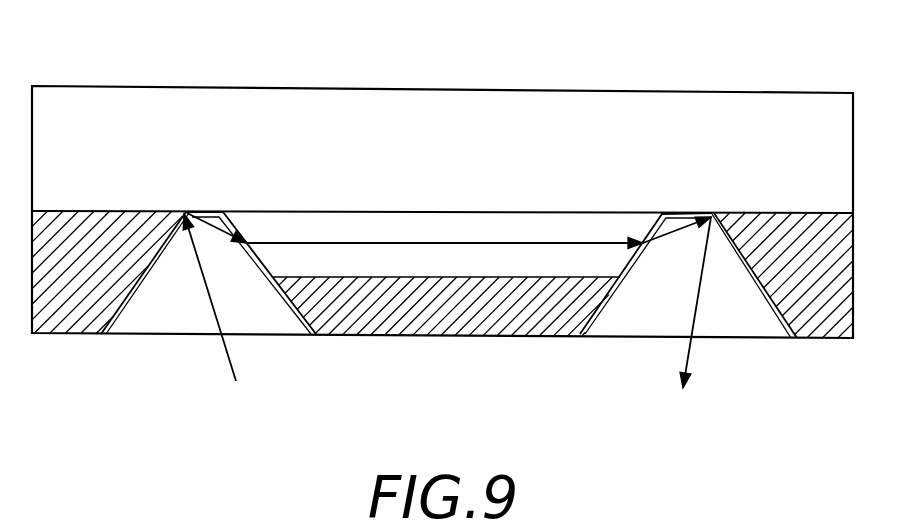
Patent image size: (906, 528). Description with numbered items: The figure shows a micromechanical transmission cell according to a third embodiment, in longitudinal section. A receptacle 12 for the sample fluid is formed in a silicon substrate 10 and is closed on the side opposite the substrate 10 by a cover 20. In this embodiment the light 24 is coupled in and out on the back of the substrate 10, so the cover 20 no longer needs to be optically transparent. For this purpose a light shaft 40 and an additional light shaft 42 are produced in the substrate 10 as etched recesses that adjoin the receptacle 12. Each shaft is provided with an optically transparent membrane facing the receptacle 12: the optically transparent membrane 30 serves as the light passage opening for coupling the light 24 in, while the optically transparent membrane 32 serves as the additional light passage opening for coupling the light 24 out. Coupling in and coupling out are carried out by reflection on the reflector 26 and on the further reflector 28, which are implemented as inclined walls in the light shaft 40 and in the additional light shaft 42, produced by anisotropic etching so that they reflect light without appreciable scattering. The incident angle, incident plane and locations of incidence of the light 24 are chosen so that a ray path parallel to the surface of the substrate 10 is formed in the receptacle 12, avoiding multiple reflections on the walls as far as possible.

The substrate 10 is at (450, 300).
The receptacle 12 is at (347, 226).
The cover 20 is at (685, 147).
The light 24 is at (231, 352).
The reflector 26 is at (140, 287).
The further reflector 28 is at (768, 300).
The optically transparent membrane 30 is at (236, 226).
The optically transparent membrane 32 is at (643, 213).
The light shaft 40 is at (181, 293).
The additional light shaft 42 is at (657, 290).